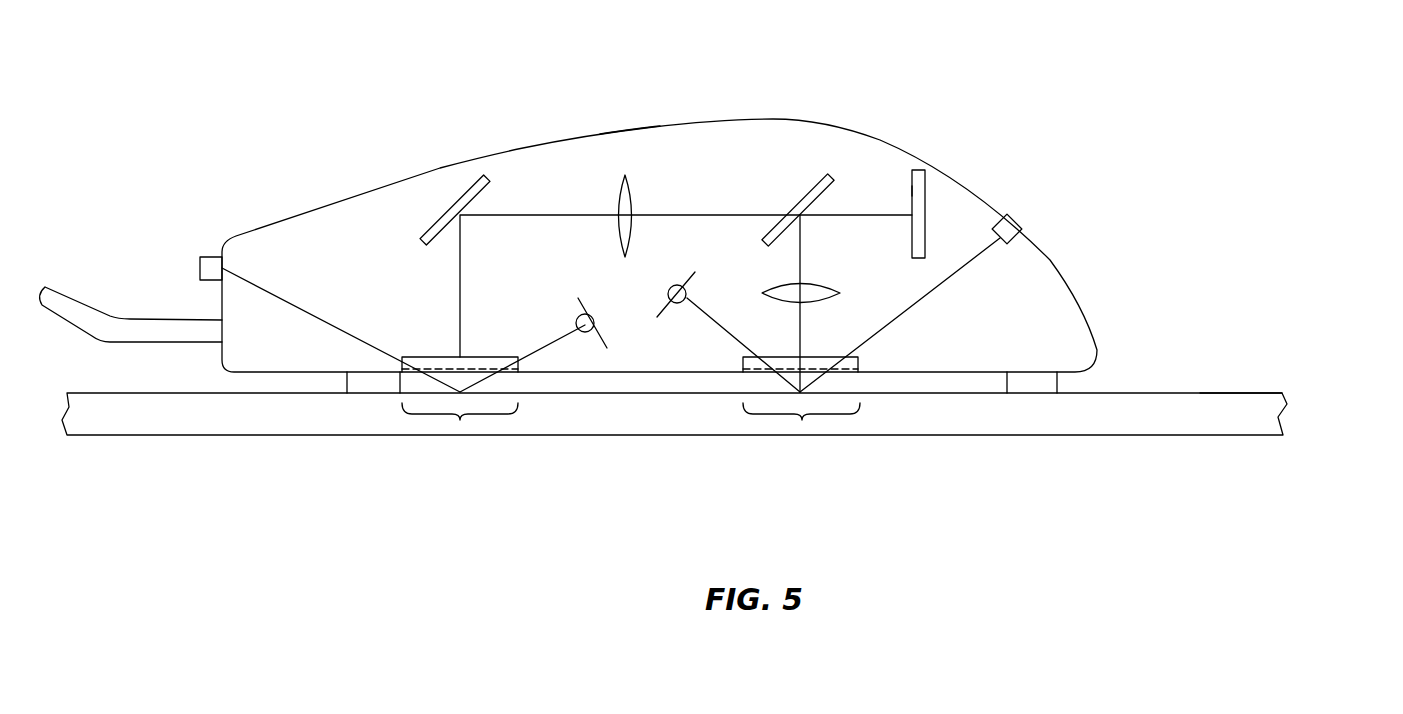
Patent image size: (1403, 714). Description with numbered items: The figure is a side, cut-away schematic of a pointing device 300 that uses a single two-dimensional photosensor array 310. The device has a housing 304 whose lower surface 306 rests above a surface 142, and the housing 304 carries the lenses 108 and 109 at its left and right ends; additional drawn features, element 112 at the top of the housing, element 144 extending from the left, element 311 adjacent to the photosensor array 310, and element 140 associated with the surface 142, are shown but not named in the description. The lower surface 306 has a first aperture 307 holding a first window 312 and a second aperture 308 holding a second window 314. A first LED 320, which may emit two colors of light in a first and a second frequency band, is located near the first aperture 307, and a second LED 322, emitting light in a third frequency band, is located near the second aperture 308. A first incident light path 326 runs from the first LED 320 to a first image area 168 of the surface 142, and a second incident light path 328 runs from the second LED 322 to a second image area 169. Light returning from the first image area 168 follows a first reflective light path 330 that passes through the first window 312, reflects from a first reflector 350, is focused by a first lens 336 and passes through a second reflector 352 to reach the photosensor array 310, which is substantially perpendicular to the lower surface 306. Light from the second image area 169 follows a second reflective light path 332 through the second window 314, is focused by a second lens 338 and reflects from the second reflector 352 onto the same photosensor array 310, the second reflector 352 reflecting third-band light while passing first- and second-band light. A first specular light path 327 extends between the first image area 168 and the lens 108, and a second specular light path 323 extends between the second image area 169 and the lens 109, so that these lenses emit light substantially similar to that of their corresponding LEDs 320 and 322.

The pointing device 300 is at (1000, 75).
The housing 304 is at (786, 119).
The housing top surface 112 is at (628, 130).
The lens 108 is at (200, 270).
The cable 144 is at (93, 305).
The first reflective light path 330 is at (518, 214).
The second reflective light path 332 is at (803, 241).
The first reflector 350 is at (430, 232).
The second reflector 352 is at (808, 187).
The first lens 336 is at (633, 197).
The second lens 338 is at (783, 289).
The photosensor array 310 is at (925, 190).
The detector surface 311 is at (912, 191).
The lens 109 is at (1017, 224).
The first specular light path 327 is at (284, 298).
The first incident light path 326 is at (548, 345).
The first LED 320 is at (598, 320).
The second LED 322 is at (670, 289).
The second incident light path 328 is at (715, 327).
The second specular light path 323 is at (943, 285).
The first window 312 is at (490, 355).
The first aperture 307 is at (452, 376).
The second window 314 is at (827, 355).
The second aperture 308 is at (800, 376).
The first image area 168 is at (460, 420).
The second image area 169 is at (802, 420).
The lower surface 306 is at (1082, 376).
The work surface 140 is at (1296, 411).
The surface 142 is at (1243, 393).